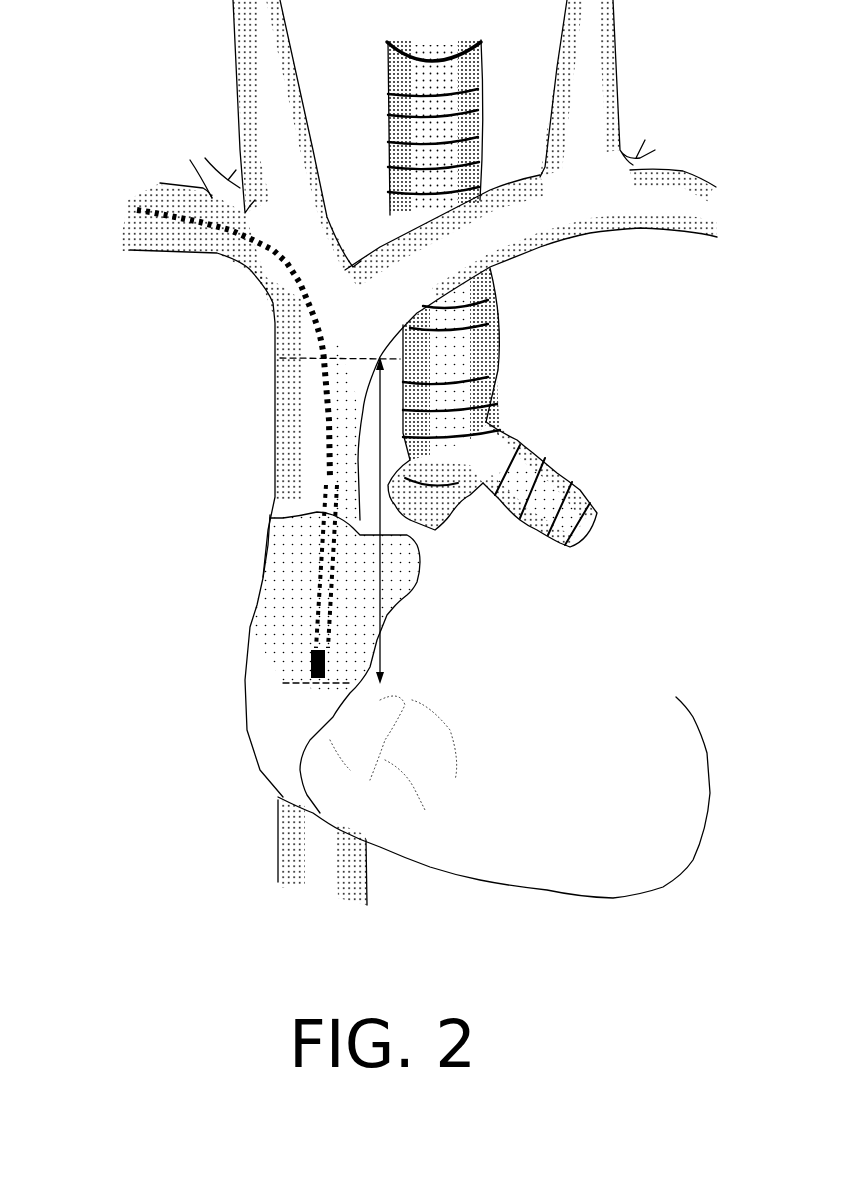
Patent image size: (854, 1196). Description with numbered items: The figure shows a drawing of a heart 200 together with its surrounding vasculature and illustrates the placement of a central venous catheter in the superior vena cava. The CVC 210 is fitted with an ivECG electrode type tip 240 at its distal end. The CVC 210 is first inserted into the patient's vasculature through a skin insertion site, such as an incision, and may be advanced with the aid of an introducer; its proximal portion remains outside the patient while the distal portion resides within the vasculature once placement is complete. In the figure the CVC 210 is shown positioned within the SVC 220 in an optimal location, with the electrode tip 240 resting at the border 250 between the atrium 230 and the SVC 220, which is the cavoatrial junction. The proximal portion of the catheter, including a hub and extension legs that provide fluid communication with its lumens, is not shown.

The heart 200 is at (195, 128).
The CVC 210 is at (320, 392).
The SVC 220 is at (381, 682).
The atrium 230 is at (280, 714).
The ivECG electrode tip 240 is at (308, 668).
The border 250 is at (352, 683).